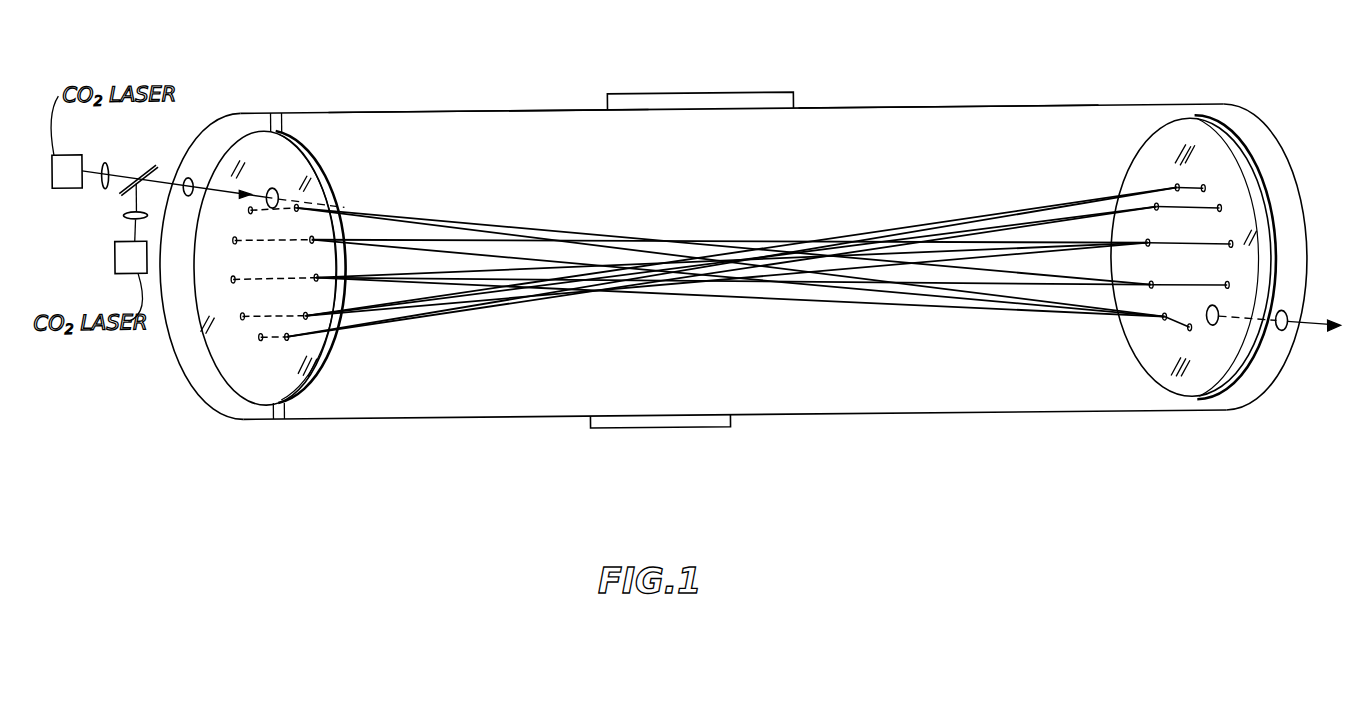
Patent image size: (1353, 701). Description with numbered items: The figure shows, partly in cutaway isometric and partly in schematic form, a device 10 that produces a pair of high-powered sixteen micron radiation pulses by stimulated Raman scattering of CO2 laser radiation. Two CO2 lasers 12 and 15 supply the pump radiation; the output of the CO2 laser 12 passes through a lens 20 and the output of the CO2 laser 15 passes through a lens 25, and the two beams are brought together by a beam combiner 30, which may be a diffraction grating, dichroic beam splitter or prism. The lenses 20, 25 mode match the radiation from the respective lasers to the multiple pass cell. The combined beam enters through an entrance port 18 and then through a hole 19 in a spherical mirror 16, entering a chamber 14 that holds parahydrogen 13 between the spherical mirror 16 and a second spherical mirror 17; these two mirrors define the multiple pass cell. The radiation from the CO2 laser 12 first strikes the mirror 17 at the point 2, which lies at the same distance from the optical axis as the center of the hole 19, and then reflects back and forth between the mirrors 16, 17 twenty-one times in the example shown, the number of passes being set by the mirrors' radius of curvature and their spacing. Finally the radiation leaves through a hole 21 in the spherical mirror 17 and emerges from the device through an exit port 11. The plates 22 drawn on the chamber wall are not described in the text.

The device 10 is at (536, 418).
The parahydrogen 13 is at (488, 110).
The chamber 14 is at (838, 109).
The plates 22 is at (655, 93).
The spherical mirror 16 is at (253, 392).
The spherical mirror 17 is at (1164, 118).
The point 2 is at (1163, 321).
The CO2 laser 12 is at (72, 184).
The lens 20 is at (105, 157).
The beam combiner 30 is at (152, 164).
The lens 25 is at (124, 210).
The CO2 laser 15 is at (115, 252).
The entrance port 18 is at (189, 173).
The hole 19 is at (278, 185).
The hole 21 is at (1218, 313).
The exit port 11 is at (1286, 318).